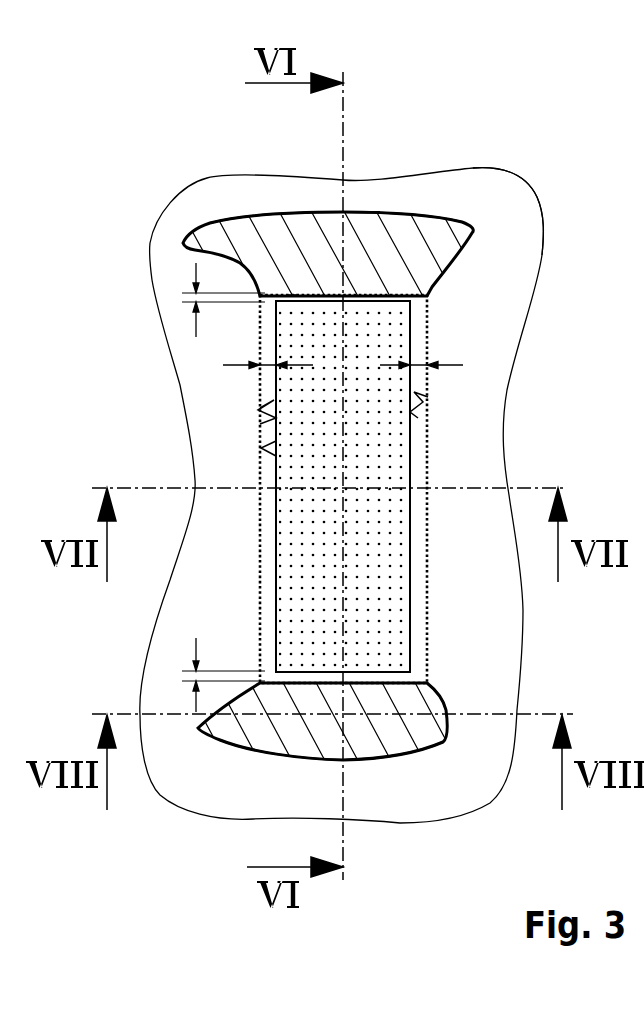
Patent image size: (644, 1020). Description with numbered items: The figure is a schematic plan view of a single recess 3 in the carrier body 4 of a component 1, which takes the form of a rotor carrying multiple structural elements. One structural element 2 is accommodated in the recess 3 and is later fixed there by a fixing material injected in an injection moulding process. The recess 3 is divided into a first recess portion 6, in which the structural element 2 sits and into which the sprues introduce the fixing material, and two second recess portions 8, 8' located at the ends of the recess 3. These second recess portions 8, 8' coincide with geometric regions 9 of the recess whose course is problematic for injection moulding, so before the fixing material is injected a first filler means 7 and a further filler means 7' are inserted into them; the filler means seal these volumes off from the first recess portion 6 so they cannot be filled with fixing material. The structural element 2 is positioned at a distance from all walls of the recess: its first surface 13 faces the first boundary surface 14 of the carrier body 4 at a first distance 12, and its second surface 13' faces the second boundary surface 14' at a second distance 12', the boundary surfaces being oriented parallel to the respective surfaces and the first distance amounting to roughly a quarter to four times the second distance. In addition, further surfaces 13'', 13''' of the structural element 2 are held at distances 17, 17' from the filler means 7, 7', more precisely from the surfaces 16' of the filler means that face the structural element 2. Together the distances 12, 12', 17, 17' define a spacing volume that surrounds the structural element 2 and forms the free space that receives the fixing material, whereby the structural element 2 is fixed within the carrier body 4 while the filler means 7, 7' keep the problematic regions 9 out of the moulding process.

The component 1 is at (558, 117).
The structural element 2 is at (393, 440).
The recess 3 is at (163, 257).
The carrier body 4 is at (513, 200).
The first recess portion 6 is at (432, 621).
The filler means 7 is at (316, 201).
The further filler means 7' is at (321, 741).
The second recess portion 8 is at (355, 157).
The second recess portion 8' is at (497, 671).
The geometric region 9 is at (426, 194).
The distance 12 is at (210, 383).
The distance 12' is at (481, 352).
The surface 13 is at (191, 451).
The surface 13' is at (496, 318).
The further surface 13'' is at (275, 199).
The further surface 13''' is at (281, 741).
The boundary surface 14 is at (191, 416).
The boundary surface 14' is at (496, 402).
The surface of the filler means 16' is at (340, 475).
The distance 17 is at (186, 307).
The distance 17' is at (179, 667).